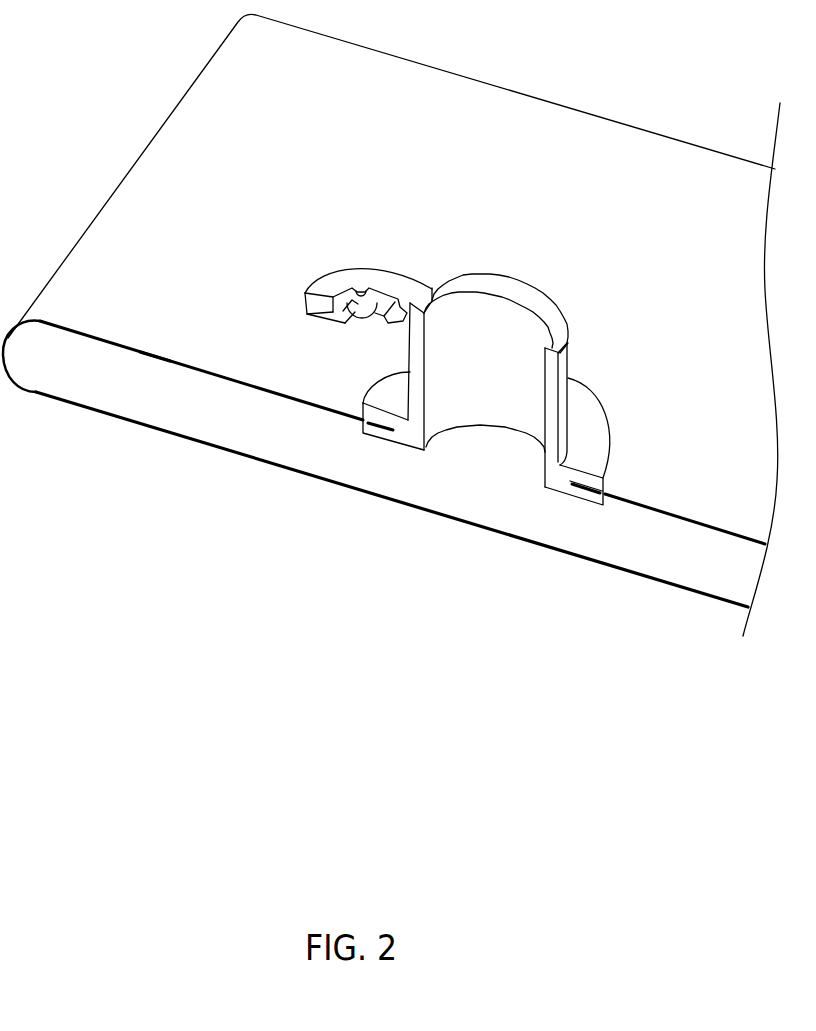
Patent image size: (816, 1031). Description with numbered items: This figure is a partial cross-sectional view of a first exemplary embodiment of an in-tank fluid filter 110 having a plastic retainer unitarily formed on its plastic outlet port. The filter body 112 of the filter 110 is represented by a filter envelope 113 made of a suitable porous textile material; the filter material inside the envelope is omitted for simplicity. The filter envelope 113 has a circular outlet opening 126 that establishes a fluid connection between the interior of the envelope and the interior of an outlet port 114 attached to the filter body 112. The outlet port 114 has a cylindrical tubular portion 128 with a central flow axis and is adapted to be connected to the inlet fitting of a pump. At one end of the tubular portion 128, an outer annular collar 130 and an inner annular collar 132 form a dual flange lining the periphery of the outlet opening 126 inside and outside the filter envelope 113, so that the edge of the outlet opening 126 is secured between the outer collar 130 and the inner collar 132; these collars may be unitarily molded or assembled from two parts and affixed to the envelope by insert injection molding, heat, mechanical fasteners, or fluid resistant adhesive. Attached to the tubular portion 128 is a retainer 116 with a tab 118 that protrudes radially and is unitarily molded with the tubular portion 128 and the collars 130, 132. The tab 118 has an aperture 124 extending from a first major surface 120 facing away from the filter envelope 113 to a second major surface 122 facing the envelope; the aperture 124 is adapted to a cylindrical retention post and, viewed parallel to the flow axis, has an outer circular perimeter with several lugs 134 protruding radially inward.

The filter 110 is at (140, 97).
The filter body 112 is at (115, 312).
The filter envelope 113 is at (153, 358).
The outlet port 114 is at (567, 347).
The retainer 116 is at (402, 283).
The tab 118 is at (373, 279).
The first major surface 120 is at (325, 292).
The second major surface 122 is at (308, 313).
The aperture 124 is at (376, 312).
The outlet opening 126 is at (472, 444).
The tubular portion 128 is at (557, 378).
The outer annular collar 130 is at (601, 447).
The inner annular collar 132 is at (578, 492).
The lugs 134 is at (345, 322).